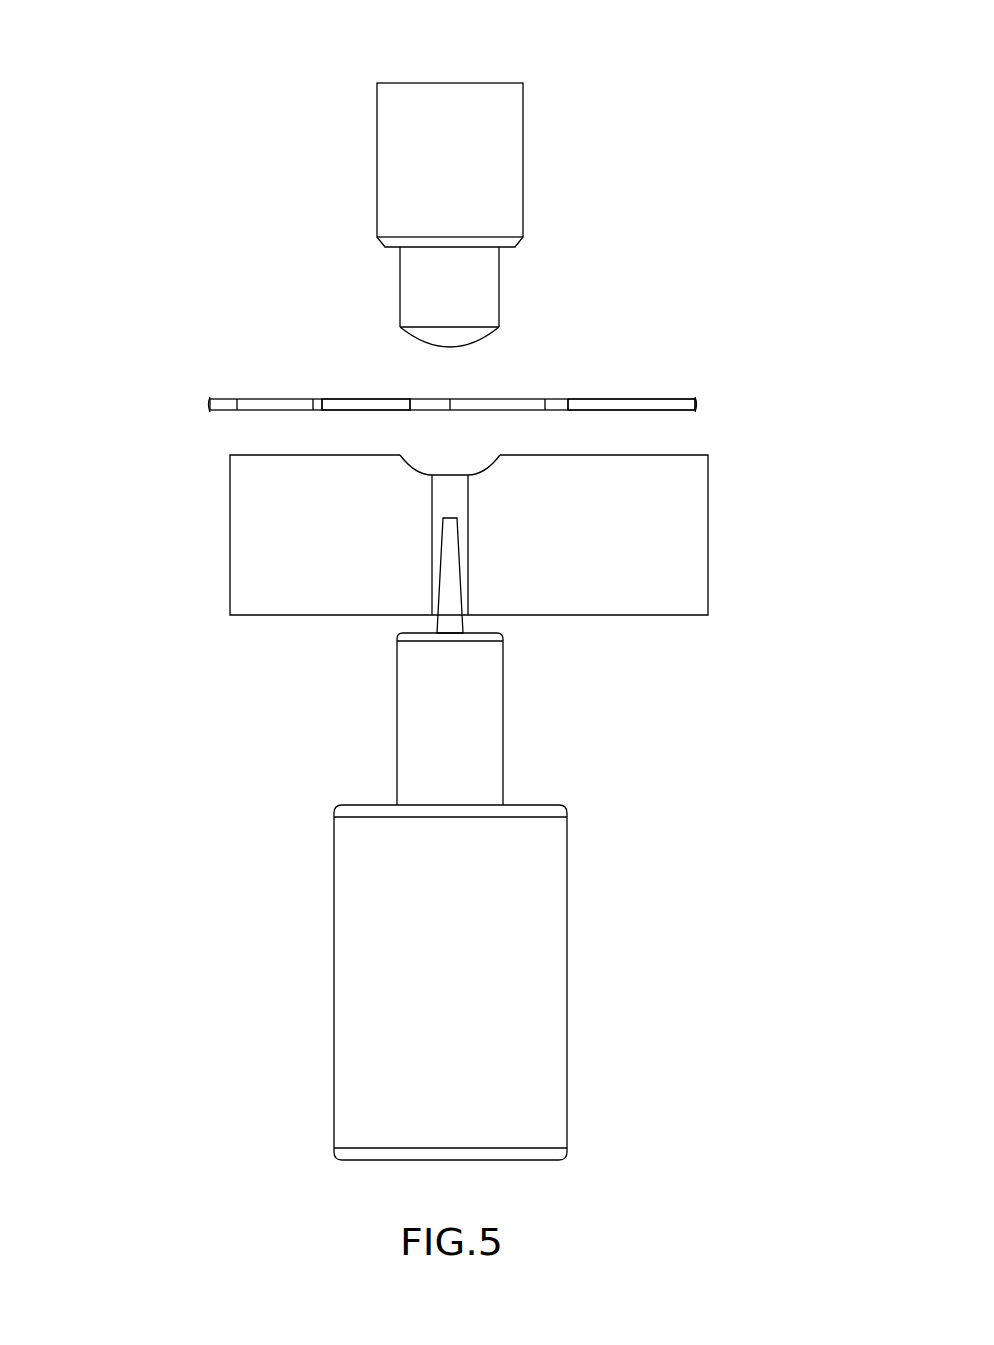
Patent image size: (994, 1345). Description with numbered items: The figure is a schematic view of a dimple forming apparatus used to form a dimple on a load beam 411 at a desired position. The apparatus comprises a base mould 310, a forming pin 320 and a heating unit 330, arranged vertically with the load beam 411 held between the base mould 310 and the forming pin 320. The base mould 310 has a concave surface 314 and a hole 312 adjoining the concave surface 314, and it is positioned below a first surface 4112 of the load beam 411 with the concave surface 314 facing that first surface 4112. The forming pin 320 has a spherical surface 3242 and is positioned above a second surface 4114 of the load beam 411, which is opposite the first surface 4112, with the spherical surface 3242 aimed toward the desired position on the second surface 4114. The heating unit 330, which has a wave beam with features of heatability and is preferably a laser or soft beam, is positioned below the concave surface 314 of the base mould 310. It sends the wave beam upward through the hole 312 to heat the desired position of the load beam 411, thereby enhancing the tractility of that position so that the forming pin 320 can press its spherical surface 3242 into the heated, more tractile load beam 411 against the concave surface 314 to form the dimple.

The forming pin 320 is at (417, 137).
The spherical surface 3242 is at (455, 347).
The load beam 411 is at (272, 405).
The second surface 4114 is at (388, 398).
The first surface 4112 is at (643, 410).
The base mould 310 is at (290, 590).
The concave surface 314 is at (490, 468).
The hole 312 is at (458, 502).
The heating unit 330 is at (362, 935).